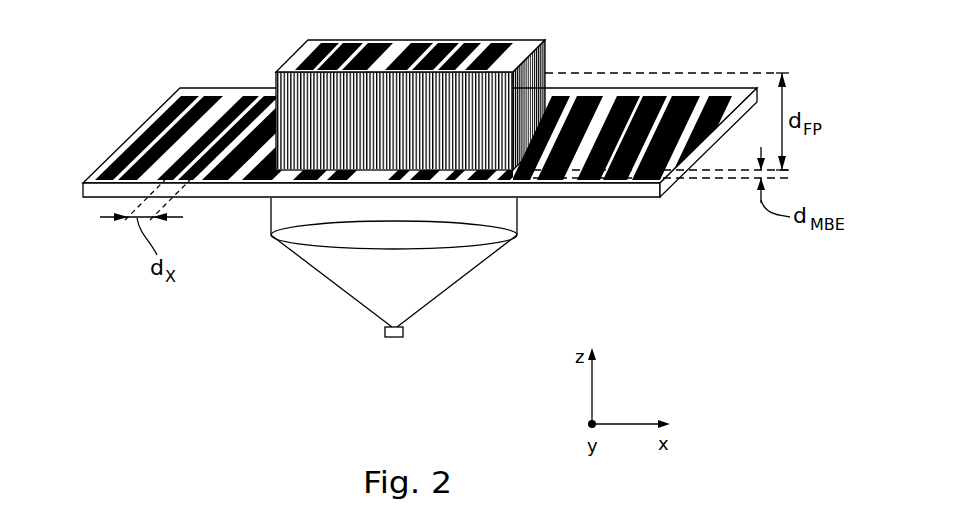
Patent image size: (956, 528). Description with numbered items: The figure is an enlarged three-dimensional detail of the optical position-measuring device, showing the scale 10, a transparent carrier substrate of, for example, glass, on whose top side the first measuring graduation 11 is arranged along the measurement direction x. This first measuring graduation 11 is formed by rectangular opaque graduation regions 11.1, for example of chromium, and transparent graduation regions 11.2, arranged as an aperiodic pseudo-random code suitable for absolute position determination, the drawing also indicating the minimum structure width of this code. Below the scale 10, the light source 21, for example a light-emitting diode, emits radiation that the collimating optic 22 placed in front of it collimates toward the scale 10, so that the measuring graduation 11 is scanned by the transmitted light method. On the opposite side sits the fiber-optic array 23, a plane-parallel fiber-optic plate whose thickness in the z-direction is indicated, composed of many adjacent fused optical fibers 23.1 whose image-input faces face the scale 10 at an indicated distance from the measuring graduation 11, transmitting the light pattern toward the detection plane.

The scale 10 is at (637, 195).
The first measuring graduation 11 is at (390, 158).
The opaque graduation regions 11.1 is at (115, 160).
The transparent graduation regions 11.2 is at (118, 175).
The light source 21 is at (385, 333).
The collimating optic 22 is at (517, 235).
The fiber-optic array 23 is at (413, 92).
The optical fibers 23.1 is at (547, 45).